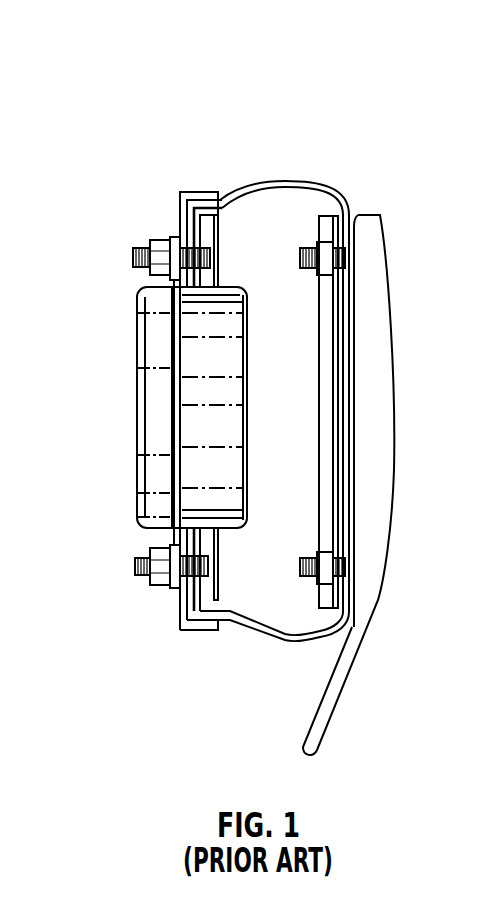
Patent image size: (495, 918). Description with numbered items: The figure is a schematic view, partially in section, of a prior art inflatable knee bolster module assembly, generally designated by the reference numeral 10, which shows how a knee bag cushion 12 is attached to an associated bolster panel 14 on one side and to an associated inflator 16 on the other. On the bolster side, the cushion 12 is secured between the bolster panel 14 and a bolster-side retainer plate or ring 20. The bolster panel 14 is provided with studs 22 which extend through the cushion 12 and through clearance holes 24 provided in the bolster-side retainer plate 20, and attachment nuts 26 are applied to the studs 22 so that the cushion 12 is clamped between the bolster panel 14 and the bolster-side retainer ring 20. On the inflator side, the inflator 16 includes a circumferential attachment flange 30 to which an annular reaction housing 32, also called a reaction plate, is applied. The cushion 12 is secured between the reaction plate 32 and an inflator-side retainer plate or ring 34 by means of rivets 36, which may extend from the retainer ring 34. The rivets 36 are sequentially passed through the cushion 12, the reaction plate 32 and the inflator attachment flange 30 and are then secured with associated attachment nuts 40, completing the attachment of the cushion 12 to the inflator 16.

The knee bolster assembly 10 is at (408, 135).
The knee bag cushion 12 is at (285, 182).
The bolster panel 14 is at (388, 262).
The inflator 16 is at (200, 405).
The bolster-side retainer plate 20 is at (325, 428).
The studs 22 is at (300, 257).
The clearance holes 24 is at (353, 217).
The attachment nuts 26 is at (326, 240).
The circumferential attachment flange 30 is at (175, 236).
The reaction housing 32 is at (184, 632).
The inflator-side retainer plate 34 is at (217, 630).
The rivets 36 is at (133, 258).
The attachment nuts 40 is at (155, 238).